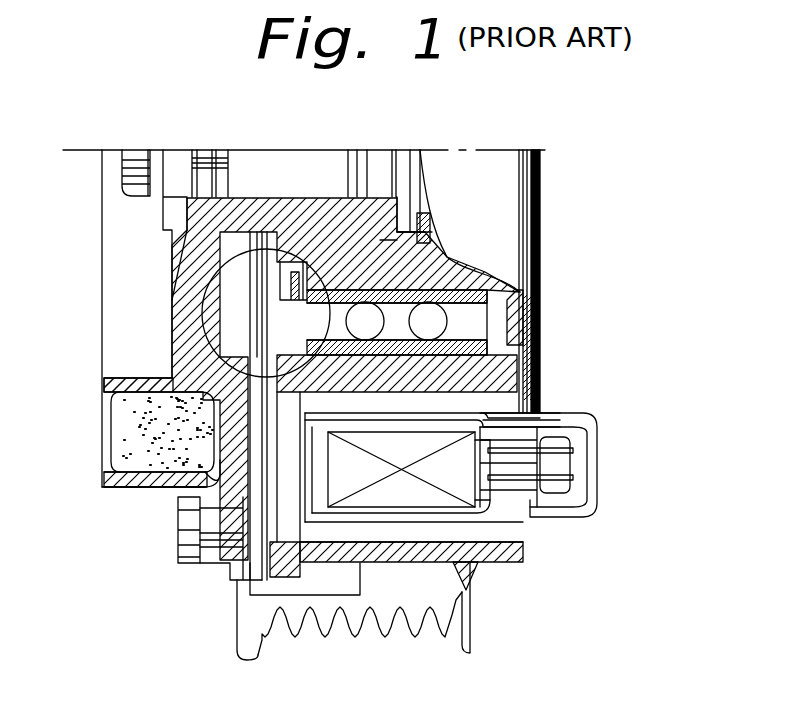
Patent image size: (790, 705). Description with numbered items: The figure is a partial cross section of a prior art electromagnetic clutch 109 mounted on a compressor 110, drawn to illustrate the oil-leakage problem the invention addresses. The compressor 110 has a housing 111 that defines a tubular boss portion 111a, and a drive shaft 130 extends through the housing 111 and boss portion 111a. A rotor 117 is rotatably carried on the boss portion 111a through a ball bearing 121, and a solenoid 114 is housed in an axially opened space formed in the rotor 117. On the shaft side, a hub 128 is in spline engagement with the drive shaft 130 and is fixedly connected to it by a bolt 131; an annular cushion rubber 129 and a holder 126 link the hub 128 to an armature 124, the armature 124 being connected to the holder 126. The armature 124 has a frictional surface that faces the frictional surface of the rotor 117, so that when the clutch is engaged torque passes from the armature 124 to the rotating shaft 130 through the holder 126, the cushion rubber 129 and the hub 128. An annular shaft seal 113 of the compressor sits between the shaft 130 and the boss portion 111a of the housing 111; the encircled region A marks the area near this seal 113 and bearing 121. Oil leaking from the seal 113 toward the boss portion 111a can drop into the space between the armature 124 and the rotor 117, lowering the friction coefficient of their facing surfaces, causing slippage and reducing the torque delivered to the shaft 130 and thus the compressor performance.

The electromagnetic clutch 109 is at (98, 502).
The compressor 110 is at (555, 220).
The housing 111 is at (493, 222).
The tubular boss portion 111a is at (336, 270).
The annular shaft seal 113 is at (432, 230).
The solenoid 114 is at (456, 503).
The rotor 117 is at (495, 384).
The ball bearing 121 is at (538, 258).
The armature 124 is at (207, 400).
The holder 126 is at (148, 490).
The hub 128 is at (198, 298).
The annular cushion rubber 129 is at (147, 436).
The drive shaft 130 is at (300, 157).
The bolt 131 is at (124, 172).
The detail region A is at (205, 262).